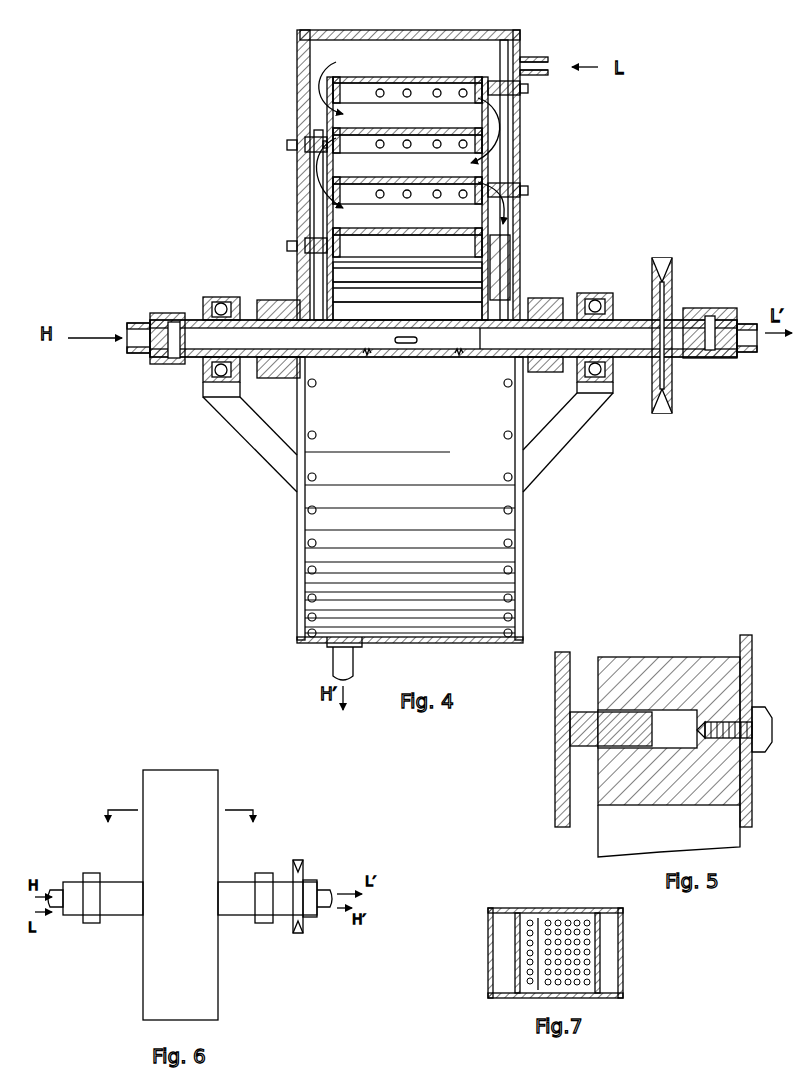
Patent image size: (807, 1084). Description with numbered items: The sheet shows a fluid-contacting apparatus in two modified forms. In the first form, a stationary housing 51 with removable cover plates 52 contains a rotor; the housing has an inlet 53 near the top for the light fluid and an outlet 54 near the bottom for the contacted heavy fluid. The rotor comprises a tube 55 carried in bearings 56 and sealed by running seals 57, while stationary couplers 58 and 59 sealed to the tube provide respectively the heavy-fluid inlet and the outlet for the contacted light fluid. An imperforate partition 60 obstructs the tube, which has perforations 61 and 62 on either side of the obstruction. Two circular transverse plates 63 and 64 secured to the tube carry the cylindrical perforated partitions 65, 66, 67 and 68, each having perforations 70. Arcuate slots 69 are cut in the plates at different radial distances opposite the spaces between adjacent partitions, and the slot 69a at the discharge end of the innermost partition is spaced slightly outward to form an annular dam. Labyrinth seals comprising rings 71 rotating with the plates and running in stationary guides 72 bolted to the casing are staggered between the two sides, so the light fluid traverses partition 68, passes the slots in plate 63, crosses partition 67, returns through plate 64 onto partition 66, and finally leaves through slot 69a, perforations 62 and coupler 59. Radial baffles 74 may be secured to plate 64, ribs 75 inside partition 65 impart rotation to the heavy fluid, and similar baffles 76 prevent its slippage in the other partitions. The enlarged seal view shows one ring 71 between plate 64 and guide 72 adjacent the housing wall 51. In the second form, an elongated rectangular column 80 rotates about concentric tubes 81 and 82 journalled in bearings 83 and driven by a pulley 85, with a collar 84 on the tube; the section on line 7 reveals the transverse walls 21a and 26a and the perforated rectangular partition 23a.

In FIG. 4, the stationary housing 51 is at (300, 92).
In FIG. 5, the stationary housing 51 is at (752, 650).
In FIG. 4, the removable cover plates 52 is at (300, 38).
In FIG. 4, the inlet 53 is at (535, 57).
In FIG. 4, the outlet 54 is at (353, 665).
In FIG. 4, the tube 55 is at (662, 300).
In FIG. 4, the bearings 56 is at (592, 293).
In FIG. 4, the running seals 57 is at (550, 298).
In FIG. 4, the stationary coupler 58 is at (168, 313).
In FIG. 4, the stationary coupler 59 is at (730, 308).
In FIG. 4, the imperforate partition 60 is at (482, 357).
In FIG. 4, the perforations 61 is at (392, 339).
In FIG. 4, the perforations 62 is at (500, 340).
In FIG. 4, the circular transverse plate 63 is at (327, 290).
In FIG. 4, the circular transverse plate 64 is at (490, 140).
In FIG. 5, the circular transverse plate 64 is at (556, 800).
In FIG. 4, the innermost partition 65 is at (385, 240).
In FIG. 4, the partition 66 is at (418, 177).
In FIG. 4, the partition 67 is at (402, 128).
In FIG. 4, the partition 68 is at (392, 77).
In FIG. 4, the arcuate slots 69 is at (327, 118).
In FIG. 4, the slot 69a is at (505, 203).
In FIG. 4, the perforations 70 is at (437, 77).
In FIG. 4, the rings 71 is at (316, 136).
In FIG. 5, the rings 71 is at (585, 728).
In FIG. 4, the stationary guides 72 is at (310, 218).
In FIG. 5, the stationary guides 72 is at (683, 657).
In FIG. 4, the radial baffles 74 is at (510, 250).
In FIG. 4, the ribs or baffles 75 is at (450, 300).
In FIG. 4, the baffles 76 is at (421, 143).
In FIG. 6, the elongated column 80 is at (218, 992).
In FIG. 7, the elongated column 80 is at (560, 908).
In FIG. 6, the tube 81 is at (310, 880).
In FIG. 6, the tube 82 is at (330, 890).
In FIG. 6, the bearings 83 is at (95, 923).
In FIG. 6, the collar 84 is at (268, 923).
In FIG. 6, the pulley 85 is at (298, 925).
In FIG. 6, the section line 7 is at (179, 829).
In FIG. 7, the wall 21a is at (515, 943).
In FIG. 7, the perforated rectangular partition 23a is at (585, 917).
In FIG. 7, the wall 26a is at (600, 932).